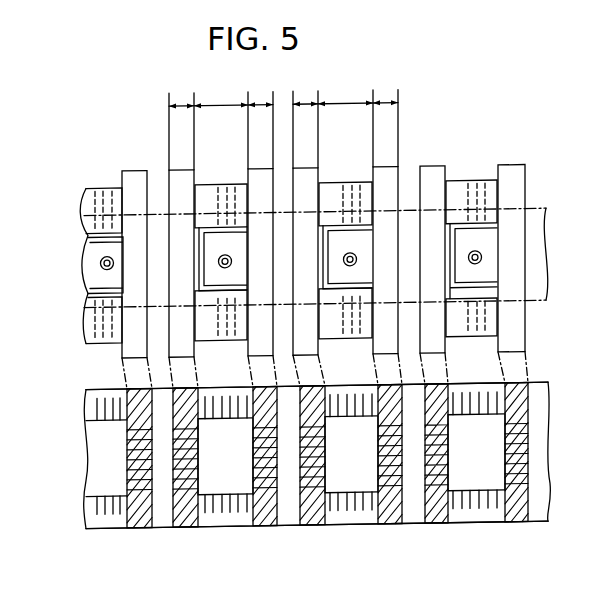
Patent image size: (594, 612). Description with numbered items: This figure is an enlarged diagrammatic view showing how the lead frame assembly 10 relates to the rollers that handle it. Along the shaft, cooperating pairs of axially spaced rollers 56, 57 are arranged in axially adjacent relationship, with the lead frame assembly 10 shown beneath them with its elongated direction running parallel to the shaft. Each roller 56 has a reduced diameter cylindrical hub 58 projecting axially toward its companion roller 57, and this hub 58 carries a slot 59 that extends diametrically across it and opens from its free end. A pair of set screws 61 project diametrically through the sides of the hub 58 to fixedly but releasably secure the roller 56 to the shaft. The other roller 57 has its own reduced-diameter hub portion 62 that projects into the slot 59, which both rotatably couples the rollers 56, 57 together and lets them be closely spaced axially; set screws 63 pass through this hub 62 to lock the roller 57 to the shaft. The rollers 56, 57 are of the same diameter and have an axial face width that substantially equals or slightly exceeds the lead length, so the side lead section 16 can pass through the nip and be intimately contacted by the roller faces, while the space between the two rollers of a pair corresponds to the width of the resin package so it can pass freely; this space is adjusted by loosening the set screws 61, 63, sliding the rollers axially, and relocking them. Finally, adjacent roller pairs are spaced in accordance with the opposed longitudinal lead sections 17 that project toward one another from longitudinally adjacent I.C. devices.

The lead frame assembly 10 is at (183, 529).
The side lead section 16 is at (472, 500).
The longitudinal lead section 17 is at (443, 476).
The roller 56 is at (183, 177).
The roller 57 is at (262, 182).
The hub 58 is at (207, 185).
The slot 59 is at (220, 290).
The set screws 61 is at (226, 184).
The hub portion 62 is at (237, 275).
The set screws 63 is at (231, 258).